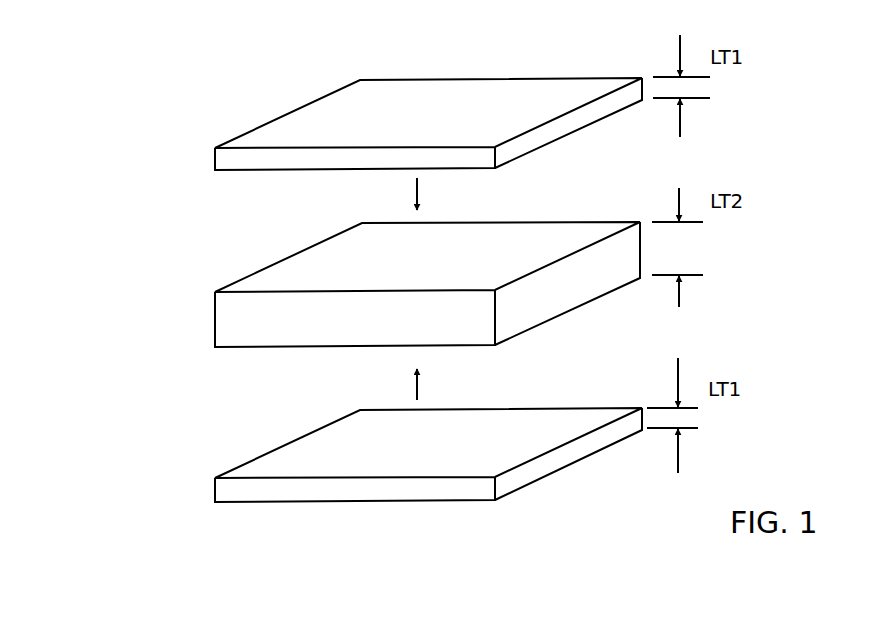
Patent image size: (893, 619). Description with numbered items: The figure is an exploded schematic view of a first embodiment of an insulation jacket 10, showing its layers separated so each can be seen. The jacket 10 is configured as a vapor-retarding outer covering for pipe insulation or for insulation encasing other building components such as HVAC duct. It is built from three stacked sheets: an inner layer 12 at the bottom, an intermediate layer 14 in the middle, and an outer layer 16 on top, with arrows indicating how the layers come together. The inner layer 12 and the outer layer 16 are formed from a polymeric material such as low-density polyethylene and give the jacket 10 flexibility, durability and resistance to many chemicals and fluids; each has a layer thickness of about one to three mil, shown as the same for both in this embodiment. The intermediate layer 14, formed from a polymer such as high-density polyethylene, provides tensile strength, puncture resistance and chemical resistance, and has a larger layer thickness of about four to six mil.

The jacket 10 is at (135, 74).
The inner layer 12 is at (217, 492).
The intermediate layer 14 is at (215, 308).
The outer layer 16 is at (215, 157).